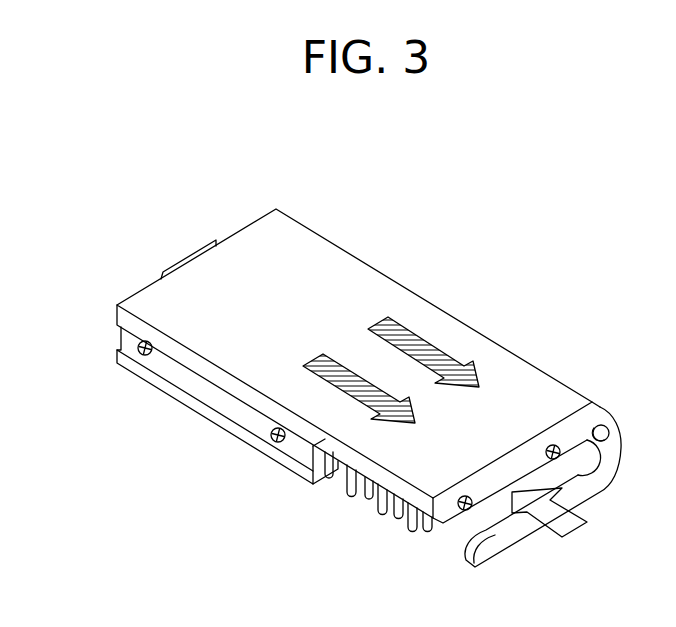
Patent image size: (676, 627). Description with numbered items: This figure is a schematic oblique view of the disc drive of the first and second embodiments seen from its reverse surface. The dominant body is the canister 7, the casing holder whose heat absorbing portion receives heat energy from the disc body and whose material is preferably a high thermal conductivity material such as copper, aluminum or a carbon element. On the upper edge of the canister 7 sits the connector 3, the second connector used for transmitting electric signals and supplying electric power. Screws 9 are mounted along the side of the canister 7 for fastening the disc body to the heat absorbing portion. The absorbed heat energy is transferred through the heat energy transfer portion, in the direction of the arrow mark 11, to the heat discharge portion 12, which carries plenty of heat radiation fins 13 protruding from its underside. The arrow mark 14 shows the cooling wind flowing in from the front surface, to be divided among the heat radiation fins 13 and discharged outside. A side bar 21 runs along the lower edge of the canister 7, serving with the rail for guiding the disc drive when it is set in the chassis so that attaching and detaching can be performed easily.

The connector 3 is at (185, 257).
The canister 7 is at (348, 278).
The screws 9 is at (122, 337).
The arrow mark 11 is at (431, 356).
The heat discharge portion 12 is at (518, 380).
The heat radiation fins 13 is at (378, 500).
The arrow mark 14 is at (559, 523).
The side bar 21 is at (198, 398).